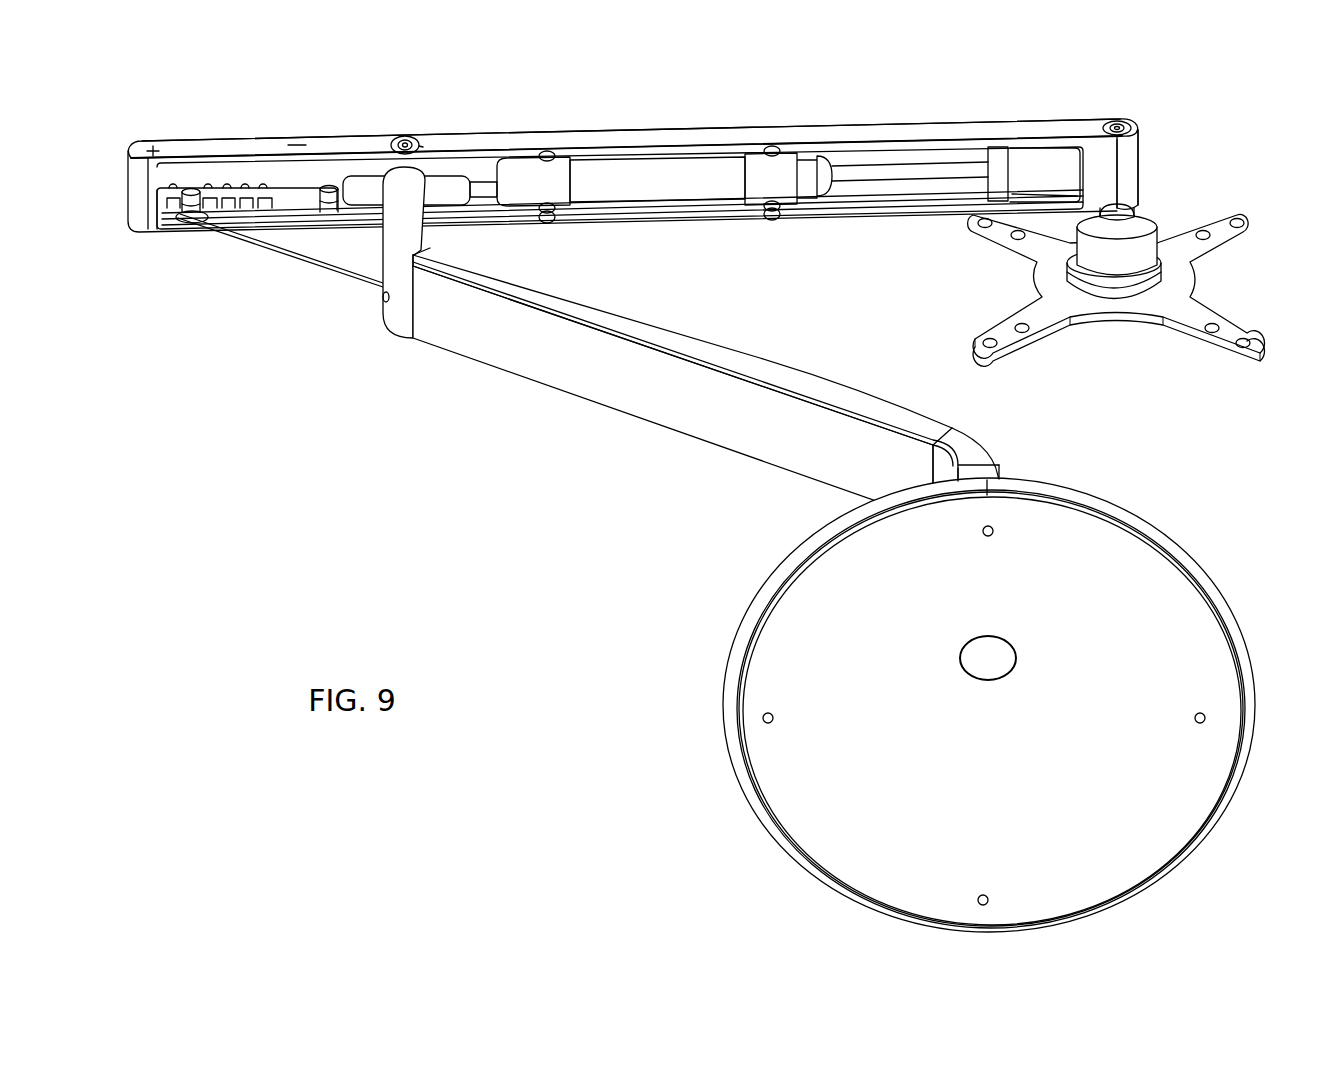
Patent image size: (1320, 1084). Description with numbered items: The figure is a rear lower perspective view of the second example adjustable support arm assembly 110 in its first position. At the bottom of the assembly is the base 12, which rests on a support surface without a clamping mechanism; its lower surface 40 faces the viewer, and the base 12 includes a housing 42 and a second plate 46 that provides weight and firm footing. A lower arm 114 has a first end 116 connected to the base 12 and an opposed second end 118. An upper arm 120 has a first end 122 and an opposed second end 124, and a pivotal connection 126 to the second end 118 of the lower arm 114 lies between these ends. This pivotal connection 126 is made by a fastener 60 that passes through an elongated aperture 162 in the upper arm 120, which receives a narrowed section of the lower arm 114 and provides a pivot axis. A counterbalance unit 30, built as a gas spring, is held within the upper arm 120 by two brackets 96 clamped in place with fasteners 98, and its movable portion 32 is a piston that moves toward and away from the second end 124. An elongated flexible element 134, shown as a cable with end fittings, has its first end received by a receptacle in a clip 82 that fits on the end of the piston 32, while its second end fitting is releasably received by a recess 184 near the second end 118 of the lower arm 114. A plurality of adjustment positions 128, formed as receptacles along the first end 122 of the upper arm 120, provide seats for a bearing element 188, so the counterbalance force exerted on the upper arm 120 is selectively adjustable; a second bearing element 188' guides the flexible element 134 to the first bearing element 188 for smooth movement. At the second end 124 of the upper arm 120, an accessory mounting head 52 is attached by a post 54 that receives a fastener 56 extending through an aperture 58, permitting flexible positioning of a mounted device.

The base 12 is at (737, 622).
The counterbalance unit 30 is at (668, 185).
The movable portion 32 is at (932, 167).
The lower surface 40 is at (881, 770).
The housing 42 is at (797, 549).
The second plate 46 is at (764, 778).
The accessory mounting head 52 is at (1165, 281).
The post 54 is at (1147, 208).
The fastener 56 is at (1138, 124).
The aperture 58 is at (1140, 128).
The fastener 60 is at (405, 138).
The clip 82 is at (998, 170).
The brackets 96 is at (528, 167).
The fasteners 98 is at (549, 155).
The adjustable support arm assembly 110 is at (314, 566).
The lower arm 114 is at (622, 419).
The first end 116 is at (981, 477).
The second end 118 is at (440, 223).
The upper arm 120 is at (674, 128).
The first end 122 is at (175, 143).
The second end 124 is at (1083, 130).
The pivotal connection 126 is at (424, 140).
The adjustment positions 128 is at (260, 187).
The elongated flexible element 134 is at (292, 260).
The elongated aperture 162 is at (366, 177).
The recess 184 is at (384, 312).
The bearing element 188 is at (180, 250).
The second bearing element 188' is at (301, 153).